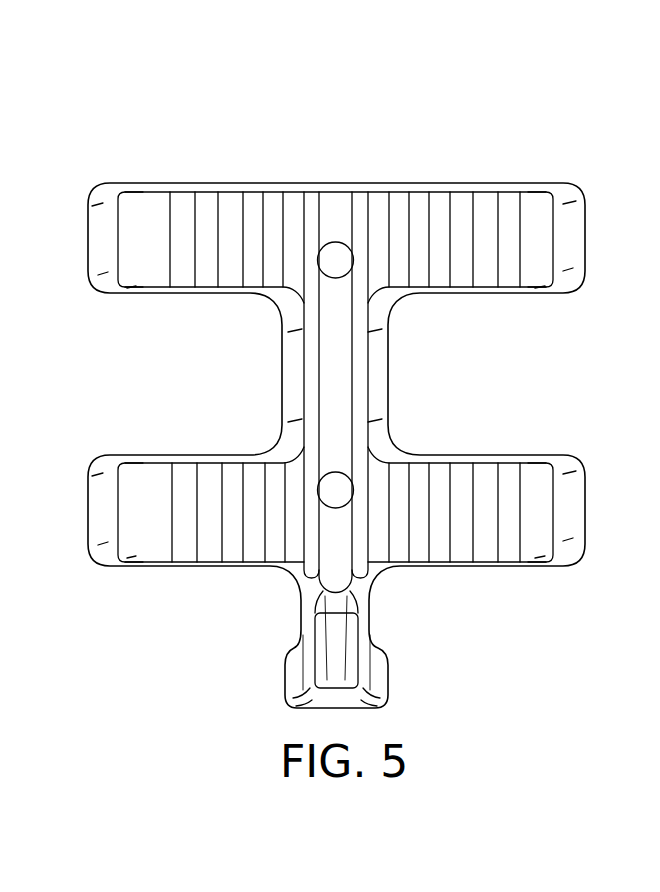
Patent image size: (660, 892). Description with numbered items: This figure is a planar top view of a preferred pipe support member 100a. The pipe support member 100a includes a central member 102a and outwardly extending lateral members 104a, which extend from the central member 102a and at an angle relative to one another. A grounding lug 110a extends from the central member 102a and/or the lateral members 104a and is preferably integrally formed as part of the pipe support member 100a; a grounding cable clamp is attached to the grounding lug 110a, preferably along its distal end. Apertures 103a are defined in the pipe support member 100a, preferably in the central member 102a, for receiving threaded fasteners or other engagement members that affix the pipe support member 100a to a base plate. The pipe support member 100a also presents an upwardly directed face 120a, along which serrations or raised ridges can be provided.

The pipe support member 100a is at (558, 118).
The central member 102a is at (352, 374).
The apertures 103a is at (333, 253).
The lateral members 104a is at (88, 227).
The grounding lug 110a is at (380, 672).
The upwardly directed face 120a is at (183, 203).